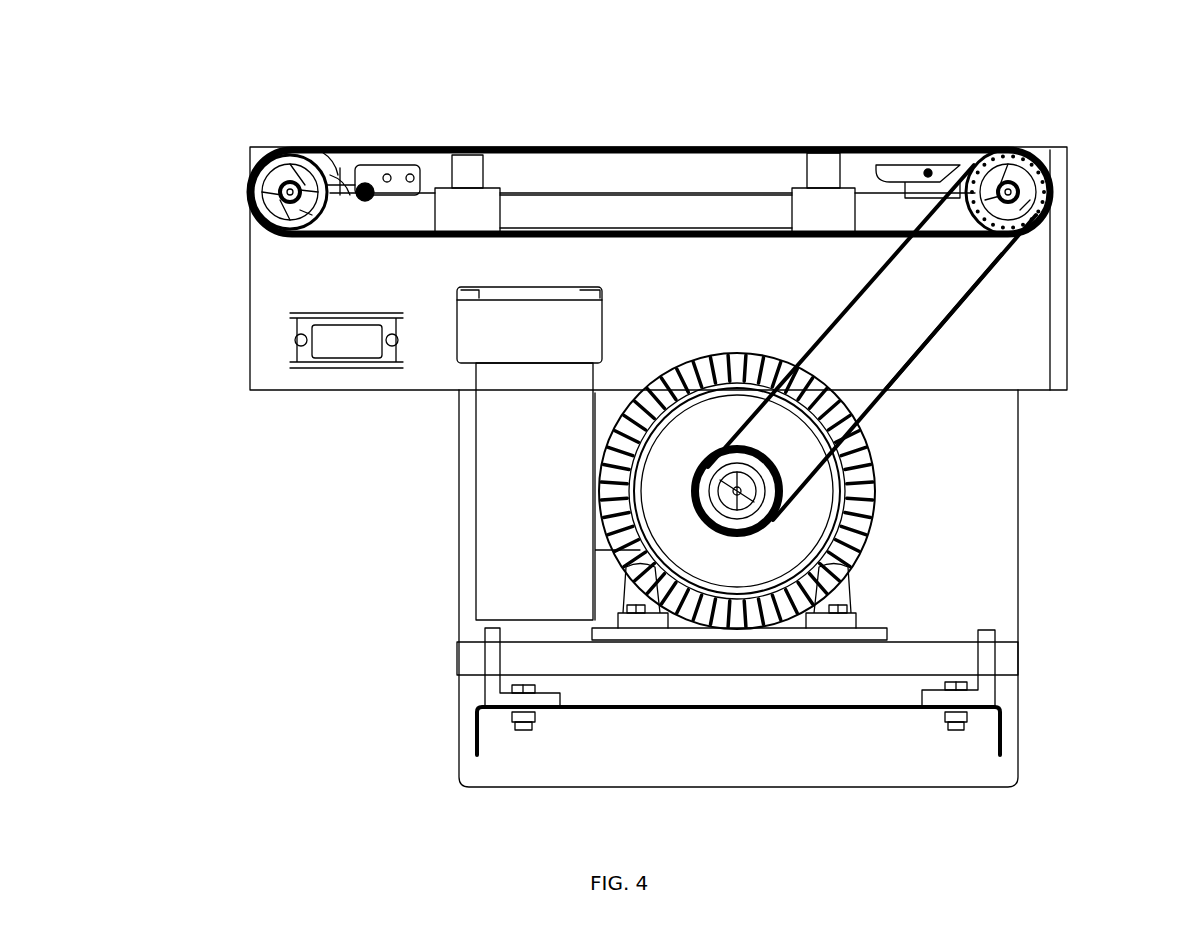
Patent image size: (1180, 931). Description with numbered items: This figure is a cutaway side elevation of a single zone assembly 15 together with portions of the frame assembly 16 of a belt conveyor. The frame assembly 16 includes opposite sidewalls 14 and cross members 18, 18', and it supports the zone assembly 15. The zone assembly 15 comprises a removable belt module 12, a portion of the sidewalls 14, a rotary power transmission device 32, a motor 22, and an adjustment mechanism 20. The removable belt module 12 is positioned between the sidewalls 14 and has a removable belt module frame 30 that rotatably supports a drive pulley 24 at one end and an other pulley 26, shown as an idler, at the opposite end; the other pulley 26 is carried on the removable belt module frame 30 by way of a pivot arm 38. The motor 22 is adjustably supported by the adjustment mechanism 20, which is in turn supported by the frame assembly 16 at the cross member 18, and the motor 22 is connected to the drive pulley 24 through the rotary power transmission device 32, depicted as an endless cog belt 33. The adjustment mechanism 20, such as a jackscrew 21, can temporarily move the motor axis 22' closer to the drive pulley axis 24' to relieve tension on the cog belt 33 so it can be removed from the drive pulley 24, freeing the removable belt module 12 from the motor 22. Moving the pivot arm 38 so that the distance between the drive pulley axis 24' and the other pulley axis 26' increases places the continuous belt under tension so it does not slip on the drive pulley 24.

The removable belt module 12 is at (818, 140).
The sidewalls 14 is at (250, 278).
The zone assembly 15 is at (1099, 103).
The frame assembly 16 is at (405, 712).
The cross member 18 is at (738, 774).
The cross member 18' is at (333, 381).
The adjustment mechanism 20 is at (950, 622).
The jackscrew 21 is at (1088, 638).
The motor 22 is at (850, 496).
The motor axis 22' is at (904, 466).
The drive pulley 24 is at (999, 192).
The drive pulley axis 24' is at (1024, 150).
The other pulley 26 is at (242, 195).
The other pulley axis 26' is at (255, 145).
The removable belt module frame 30 is at (630, 183).
The rotary power transmission device 32 is at (1067, 283).
The cog belt 33 is at (940, 332).
The pivot arm 38 is at (346, 165).